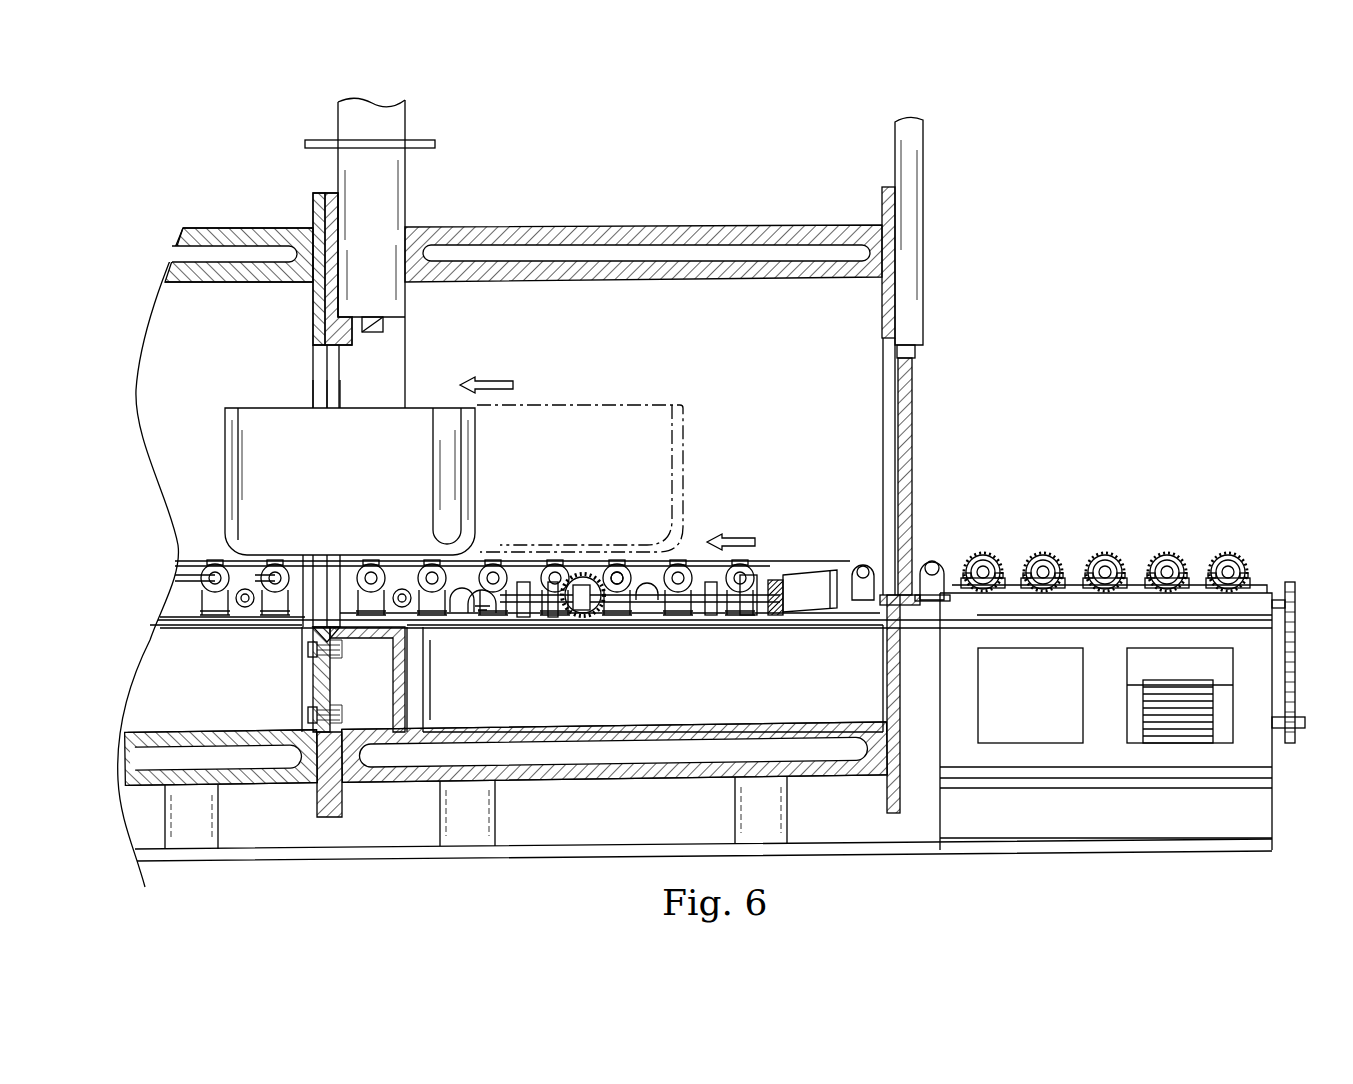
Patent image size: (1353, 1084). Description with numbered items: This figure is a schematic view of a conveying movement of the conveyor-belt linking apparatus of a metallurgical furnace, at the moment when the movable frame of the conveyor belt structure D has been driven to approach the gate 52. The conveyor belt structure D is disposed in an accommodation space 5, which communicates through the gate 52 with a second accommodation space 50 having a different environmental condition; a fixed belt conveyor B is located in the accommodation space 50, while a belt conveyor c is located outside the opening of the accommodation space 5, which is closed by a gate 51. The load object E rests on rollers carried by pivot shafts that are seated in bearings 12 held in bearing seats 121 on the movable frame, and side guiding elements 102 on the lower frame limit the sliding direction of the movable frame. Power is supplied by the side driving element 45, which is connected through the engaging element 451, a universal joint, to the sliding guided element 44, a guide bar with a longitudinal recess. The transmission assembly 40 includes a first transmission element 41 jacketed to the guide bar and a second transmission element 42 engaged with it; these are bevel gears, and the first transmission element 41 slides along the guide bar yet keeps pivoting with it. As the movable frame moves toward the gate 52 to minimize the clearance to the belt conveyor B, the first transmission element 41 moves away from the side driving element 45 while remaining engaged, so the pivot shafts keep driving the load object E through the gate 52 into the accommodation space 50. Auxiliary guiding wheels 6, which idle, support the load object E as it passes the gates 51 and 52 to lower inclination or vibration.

The accommodation space 50 is at (237, 227).
The gate 52 is at (382, 193).
The accommodation space 5 is at (702, 225).
The gate 51 is at (917, 282).
The auxiliary guiding wheels 6 is at (870, 552).
The bearings 12 is at (618, 564).
The bearing seats 121 is at (633, 562).
The side guiding elements 102 is at (482, 618).
The transmission assembly 40 is at (600, 690).
The first transmission element 41 is at (567, 617).
The second transmission element 42 is at (593, 613).
The sliding guided element 44 is at (675, 597).
The engaging element 451 is at (757, 617).
The side driving element 45 is at (823, 590).
The load object E is at (225, 440).
The belt conveyor B is at (200, 540).
The conveyor belt structure D is at (540, 540).
The belt conveyor c is at (1205, 535).